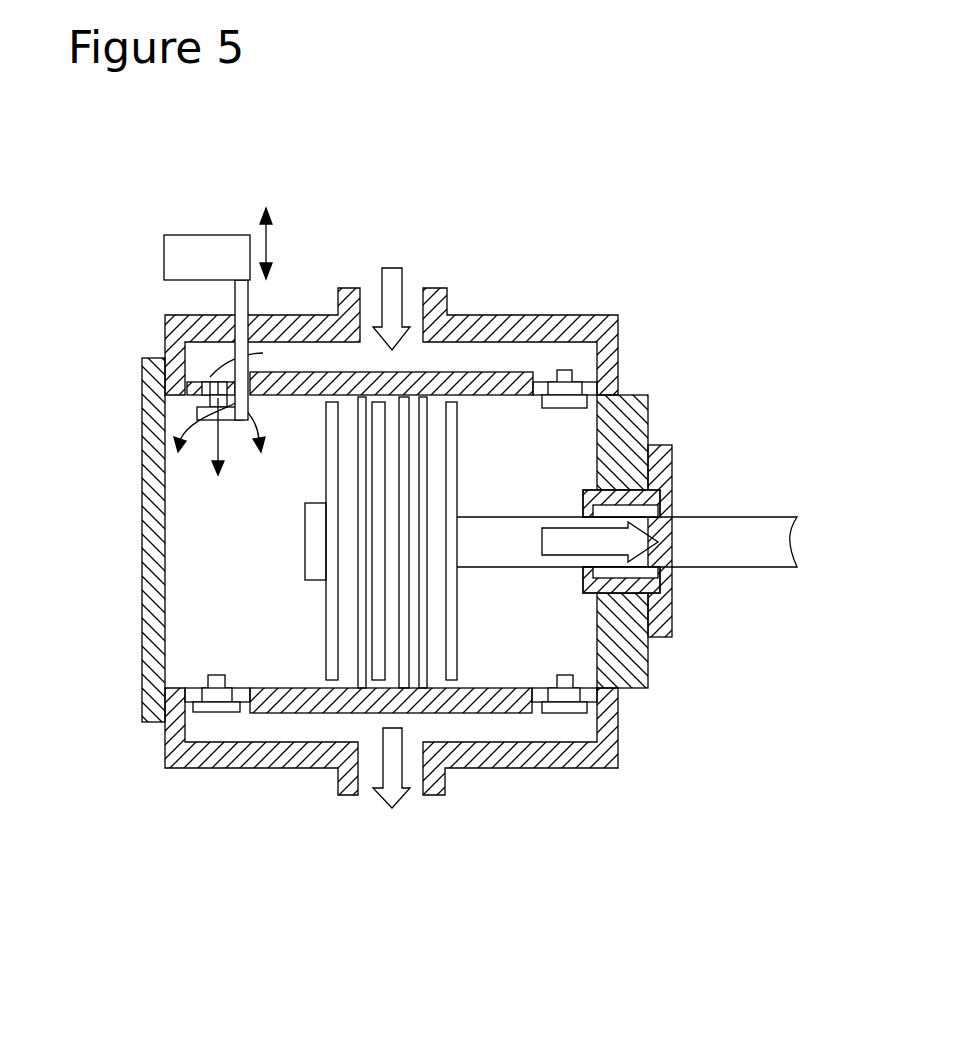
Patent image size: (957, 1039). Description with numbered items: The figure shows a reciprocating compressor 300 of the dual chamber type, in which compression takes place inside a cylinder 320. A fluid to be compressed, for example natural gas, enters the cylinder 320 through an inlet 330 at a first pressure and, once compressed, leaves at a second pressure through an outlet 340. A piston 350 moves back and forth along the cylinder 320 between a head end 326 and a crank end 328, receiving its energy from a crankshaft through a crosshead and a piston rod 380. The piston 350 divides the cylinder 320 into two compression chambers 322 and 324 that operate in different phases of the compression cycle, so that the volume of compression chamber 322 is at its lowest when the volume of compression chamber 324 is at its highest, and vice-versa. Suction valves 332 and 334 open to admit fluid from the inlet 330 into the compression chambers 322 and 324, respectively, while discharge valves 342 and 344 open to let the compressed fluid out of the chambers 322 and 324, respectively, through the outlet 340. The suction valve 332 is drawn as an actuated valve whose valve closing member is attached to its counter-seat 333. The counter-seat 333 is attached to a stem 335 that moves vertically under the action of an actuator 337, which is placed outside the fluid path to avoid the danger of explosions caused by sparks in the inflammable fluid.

The reciprocating compressor 300 is at (660, 255).
The cylinder 320 is at (475, 700).
The compression chamber 322 is at (185, 608).
The compression chamber 324 is at (565, 650).
The head end 326 is at (152, 525).
The crank end 328 is at (625, 433).
The inlet 330 is at (395, 283).
The suction valve 332 is at (203, 395).
The counter-seat 333 is at (212, 418).
The suction valve 334 is at (573, 402).
The stem 335 is at (243, 302).
The actuator 337 is at (192, 258).
The outlet 340 is at (388, 797).
The discharge valve 342 is at (213, 705).
The discharge valve 344 is at (568, 707).
The piston 350 is at (345, 672).
The piston rod 380 is at (717, 530).